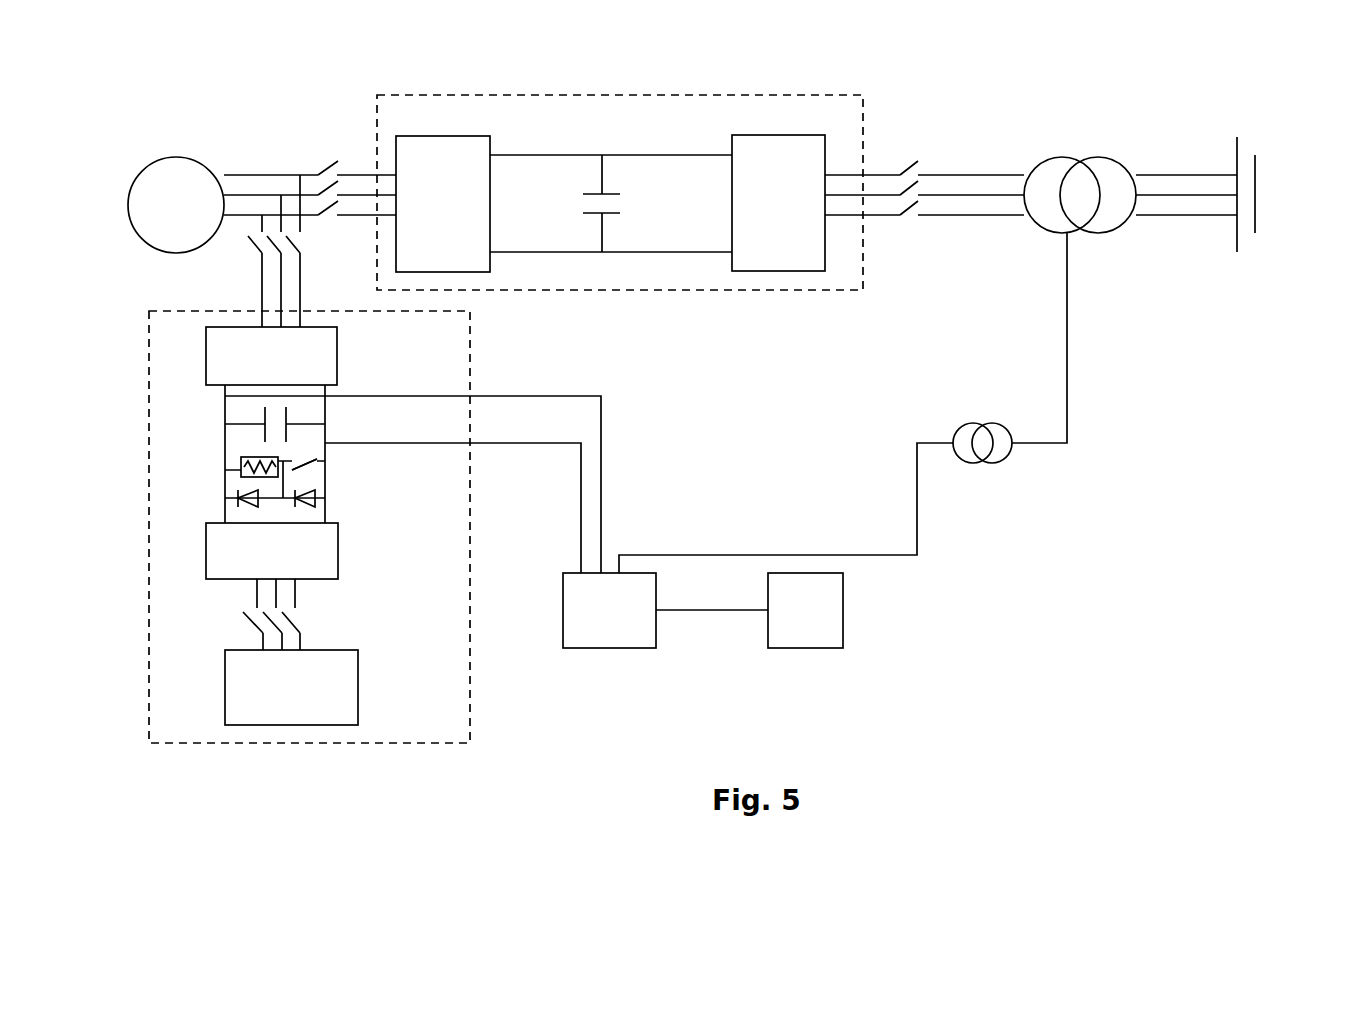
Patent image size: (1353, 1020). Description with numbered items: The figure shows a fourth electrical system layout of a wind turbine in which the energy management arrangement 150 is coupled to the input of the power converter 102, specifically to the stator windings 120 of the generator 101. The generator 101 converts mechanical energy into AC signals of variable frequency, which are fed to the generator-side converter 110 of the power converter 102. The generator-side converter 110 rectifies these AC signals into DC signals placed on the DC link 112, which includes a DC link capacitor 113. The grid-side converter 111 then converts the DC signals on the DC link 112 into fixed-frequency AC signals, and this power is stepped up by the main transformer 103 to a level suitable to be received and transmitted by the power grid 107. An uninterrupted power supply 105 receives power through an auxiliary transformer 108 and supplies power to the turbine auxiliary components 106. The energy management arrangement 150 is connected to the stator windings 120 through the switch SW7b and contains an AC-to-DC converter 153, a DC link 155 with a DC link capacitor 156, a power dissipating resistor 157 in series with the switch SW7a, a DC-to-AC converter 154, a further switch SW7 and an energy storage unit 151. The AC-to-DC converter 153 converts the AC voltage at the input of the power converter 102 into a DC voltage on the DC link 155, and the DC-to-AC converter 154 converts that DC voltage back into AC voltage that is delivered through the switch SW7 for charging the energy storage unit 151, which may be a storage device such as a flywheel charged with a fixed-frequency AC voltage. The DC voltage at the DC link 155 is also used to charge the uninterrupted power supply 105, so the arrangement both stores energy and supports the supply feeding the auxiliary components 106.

The generator 101 is at (189, 157).
The stator windings 120 is at (264, 175).
The switch SW7b is at (309, 251).
The power converter 102 is at (865, 135).
The generator-side converter 110 is at (451, 178).
The DC link 112 is at (528, 155).
The DC link capacitor 113 is at (600, 234).
The grid-side converter 111 is at (786, 177).
The main transformer 103 is at (1108, 157).
The power grid 107 is at (1258, 176).
The auxiliary transformer 108 is at (992, 423).
The uninterrupted power supply 105 is at (640, 649).
The turbine auxiliary components 106 is at (825, 612).
The energy management arrangement 150 is at (149, 463).
The AC-to-DC converter 153 is at (260, 368).
The DC link capacitor 156 is at (296, 421).
The DC link 155 is at (241, 466).
The switch SW7a is at (340, 470).
The power dissipating resistor 157 is at (241, 469).
The DC-to-AC converter 154 is at (260, 562).
The switch SW7 is at (311, 614).
The energy storage unit 151 is at (280, 688).